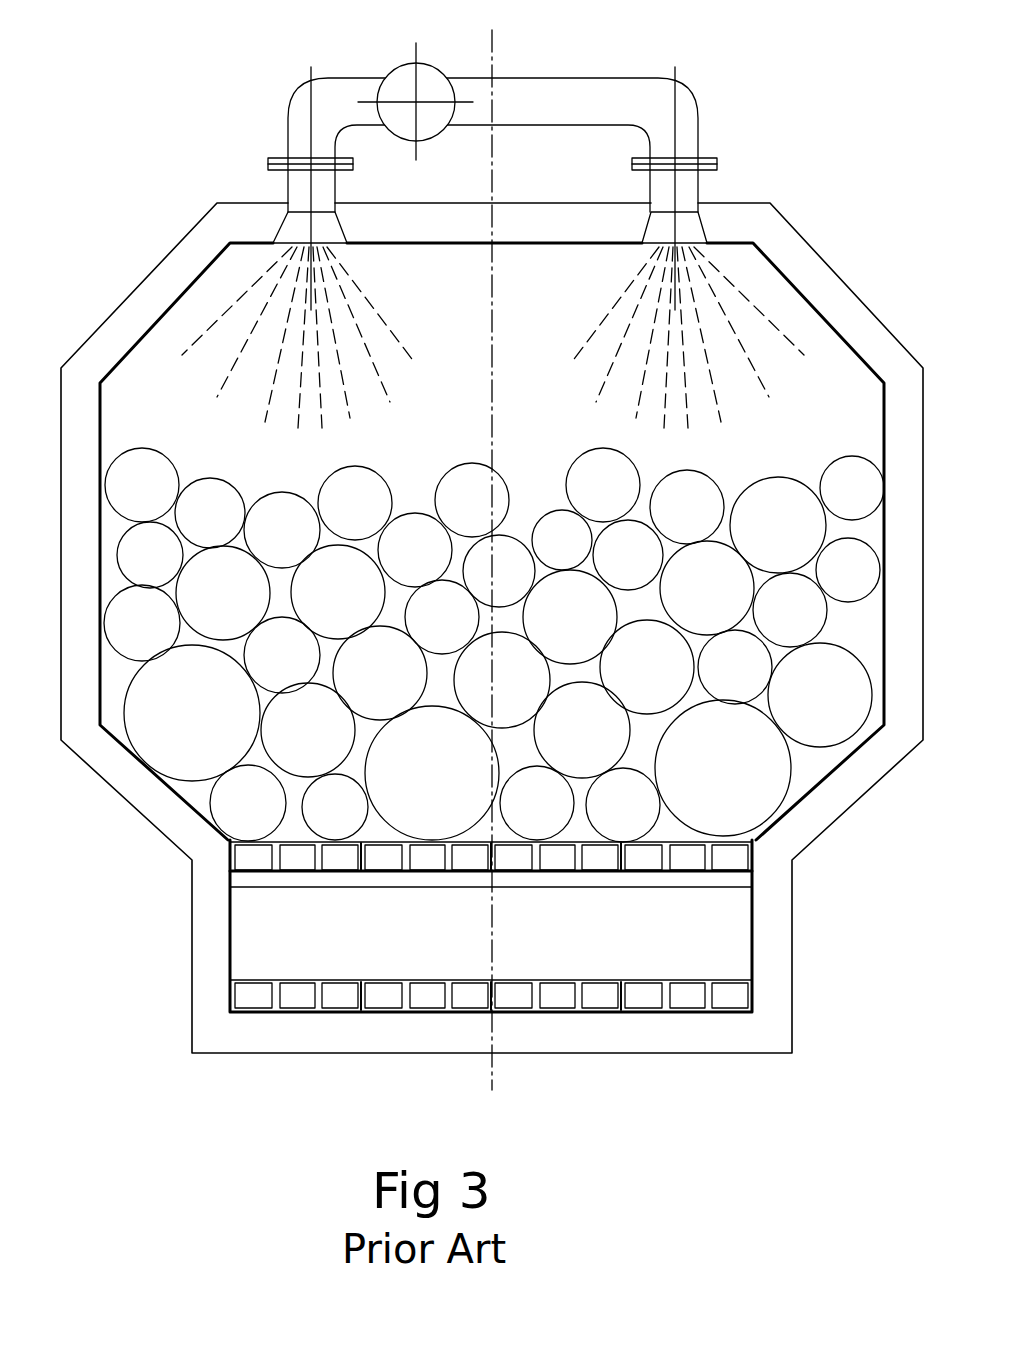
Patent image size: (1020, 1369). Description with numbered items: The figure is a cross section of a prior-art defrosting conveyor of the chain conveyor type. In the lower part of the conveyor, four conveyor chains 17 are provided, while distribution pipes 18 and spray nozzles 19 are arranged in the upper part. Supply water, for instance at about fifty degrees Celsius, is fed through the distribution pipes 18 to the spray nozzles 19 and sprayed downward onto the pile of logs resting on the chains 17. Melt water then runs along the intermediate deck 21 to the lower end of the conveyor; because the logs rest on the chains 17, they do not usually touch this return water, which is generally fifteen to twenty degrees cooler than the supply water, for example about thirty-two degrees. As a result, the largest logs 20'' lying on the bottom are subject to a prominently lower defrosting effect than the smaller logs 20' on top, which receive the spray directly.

The conveyor chains 17 is at (302, 862).
The distribution pipes 18 is at (579, 93).
The spray nozzles 19 is at (657, 228).
The smaller logs 20' is at (413, 471).
The largest logs 20'' is at (314, 742).
The intermediate deck 21 is at (568, 877).